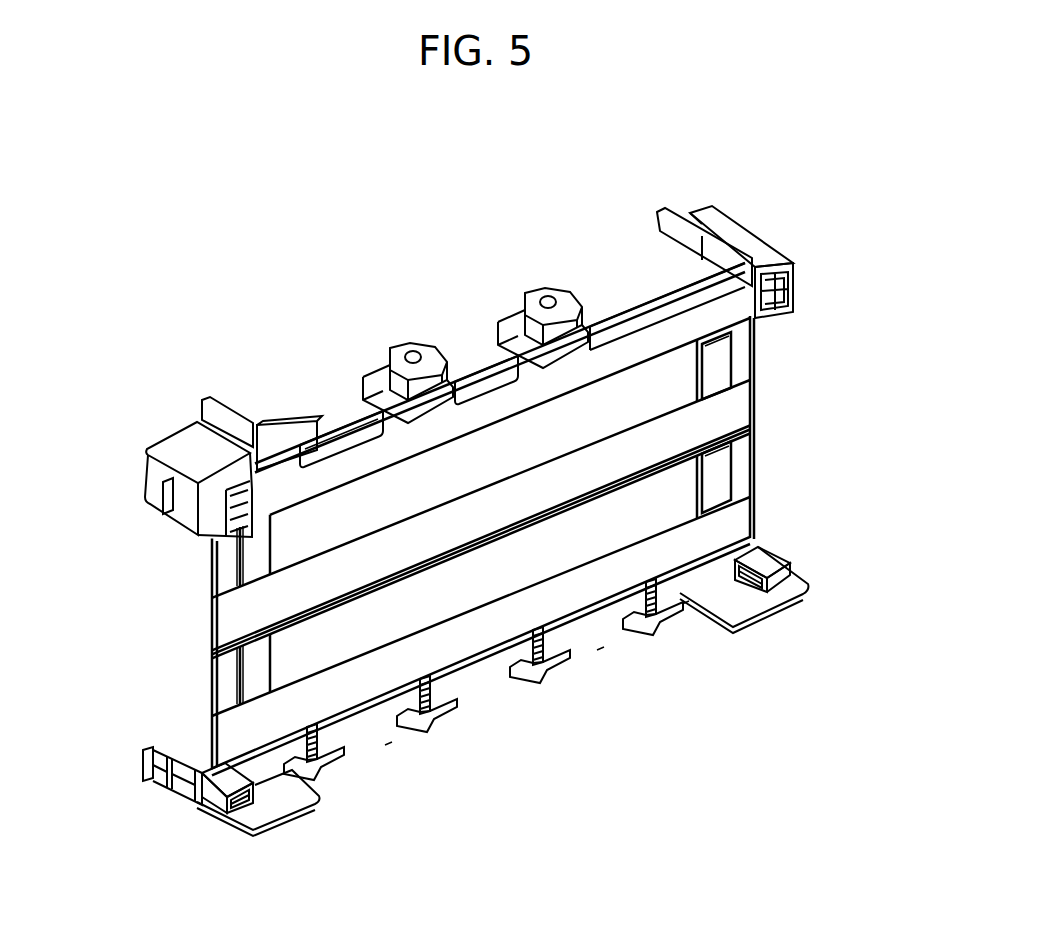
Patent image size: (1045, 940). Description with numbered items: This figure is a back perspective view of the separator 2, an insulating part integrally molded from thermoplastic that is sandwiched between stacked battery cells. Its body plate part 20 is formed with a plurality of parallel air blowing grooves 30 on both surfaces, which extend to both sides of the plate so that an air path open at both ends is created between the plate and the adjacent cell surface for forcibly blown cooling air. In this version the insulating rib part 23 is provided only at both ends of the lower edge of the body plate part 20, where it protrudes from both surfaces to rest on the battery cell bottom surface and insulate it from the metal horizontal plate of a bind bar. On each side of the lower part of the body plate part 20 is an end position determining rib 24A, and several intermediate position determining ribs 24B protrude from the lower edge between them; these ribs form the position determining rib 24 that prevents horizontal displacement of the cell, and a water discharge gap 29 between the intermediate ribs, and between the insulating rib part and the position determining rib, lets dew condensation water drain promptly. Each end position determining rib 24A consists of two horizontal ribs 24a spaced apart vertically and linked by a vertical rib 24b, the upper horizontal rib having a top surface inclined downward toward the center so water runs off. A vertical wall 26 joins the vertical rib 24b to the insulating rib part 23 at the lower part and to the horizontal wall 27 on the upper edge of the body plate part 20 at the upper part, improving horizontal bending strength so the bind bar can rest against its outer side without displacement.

The separator 2 is at (300, 257).
The body plate part 20 is at (540, 428).
The insulating rib part 23 is at (778, 604).
The position determining rib 24 is at (445, 841).
The end position determining rib 24A is at (777, 318).
The intermediate position determining rib 24B is at (368, 748).
The horizontal rib 24a is at (793, 293).
The vertical rib 24b is at (712, 312).
The vertical wall 26 is at (180, 510).
The horizontal wall 27 is at (767, 257).
The water discharge gap 29 is at (682, 600).
The air blowing groove 30 is at (727, 412).